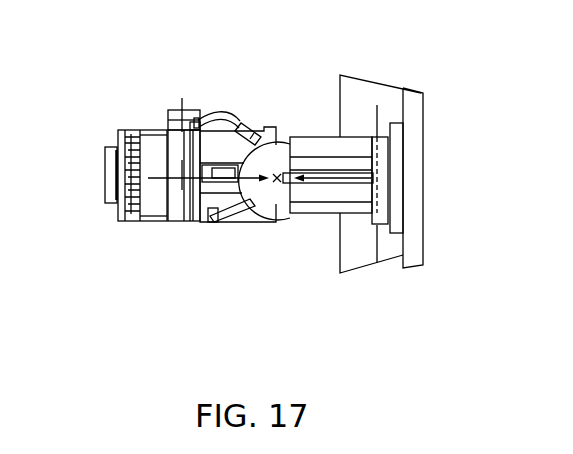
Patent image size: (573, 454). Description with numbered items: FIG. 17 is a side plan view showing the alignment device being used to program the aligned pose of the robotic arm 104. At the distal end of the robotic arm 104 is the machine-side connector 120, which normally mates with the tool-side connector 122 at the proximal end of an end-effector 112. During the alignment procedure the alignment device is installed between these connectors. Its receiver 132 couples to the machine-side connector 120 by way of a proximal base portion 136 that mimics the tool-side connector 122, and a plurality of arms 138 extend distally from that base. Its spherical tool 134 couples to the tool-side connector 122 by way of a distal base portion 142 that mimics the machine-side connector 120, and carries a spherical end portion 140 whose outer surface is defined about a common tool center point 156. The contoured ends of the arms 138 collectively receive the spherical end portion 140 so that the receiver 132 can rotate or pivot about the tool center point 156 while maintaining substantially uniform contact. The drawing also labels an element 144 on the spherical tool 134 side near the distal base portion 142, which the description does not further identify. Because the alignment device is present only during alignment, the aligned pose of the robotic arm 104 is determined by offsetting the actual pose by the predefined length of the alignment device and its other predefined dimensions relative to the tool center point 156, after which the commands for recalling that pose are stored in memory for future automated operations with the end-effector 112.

The robotic arm 104 is at (110, 177).
The end-effector 112 is at (412, 98).
The machine-side connector 120 is at (152, 205).
The tool-side connector 122 is at (397, 150).
The receiver 132 is at (215, 91).
The spherical tool 134 is at (321, 78).
The proximal base portion 136 is at (173, 213).
The arms 138 is at (233, 213).
The spherical end portion 140 is at (261, 211).
The distal base portion 142 is at (377, 212).
The housing sleeve 144 is at (357, 195).
The tool center point 156 is at (276, 172).